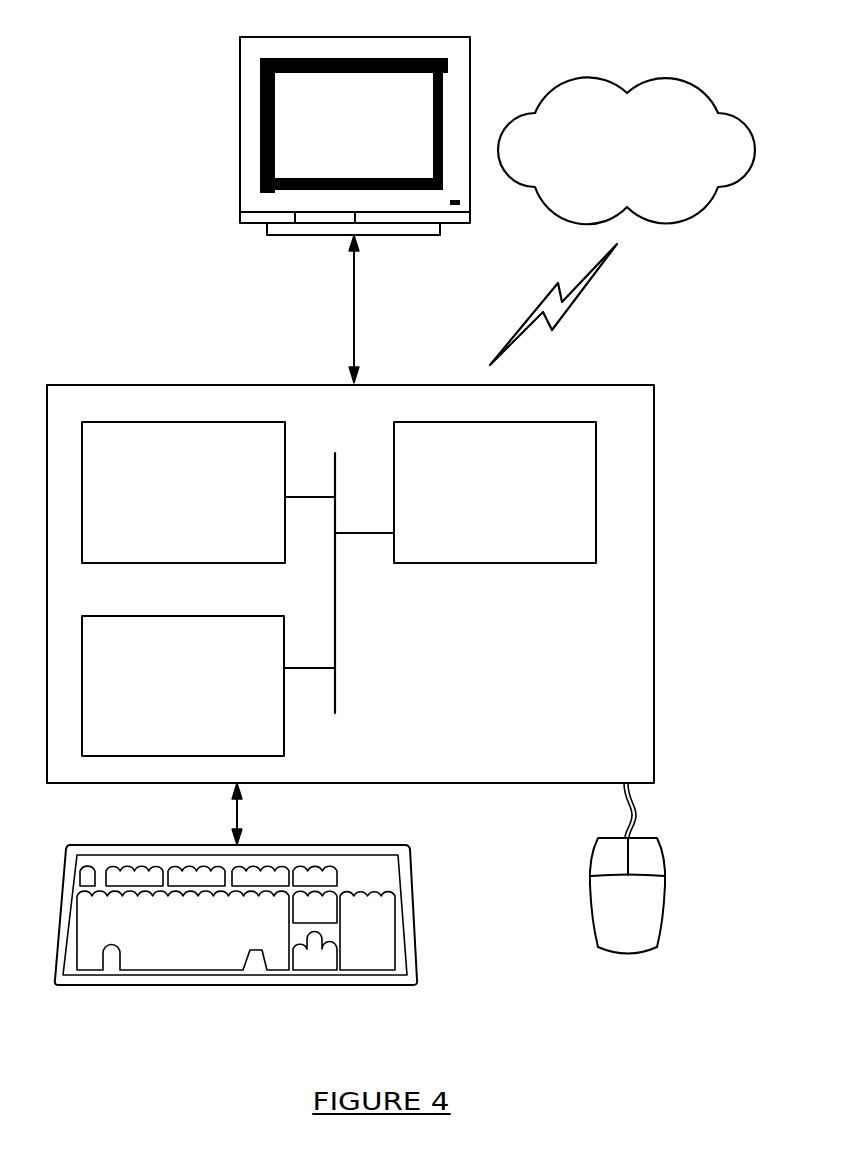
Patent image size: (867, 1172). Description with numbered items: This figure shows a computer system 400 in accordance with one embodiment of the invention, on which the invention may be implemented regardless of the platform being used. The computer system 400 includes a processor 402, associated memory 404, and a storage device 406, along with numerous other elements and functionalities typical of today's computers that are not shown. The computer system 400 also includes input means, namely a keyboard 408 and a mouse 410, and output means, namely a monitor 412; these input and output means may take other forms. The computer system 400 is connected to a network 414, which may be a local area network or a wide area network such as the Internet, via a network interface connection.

The computer system 400 is at (690, 594).
The processor 402 is at (475, 504).
The memory 404 is at (165, 504).
The storage device 406 is at (162, 697).
The keyboard 408 is at (157, 950).
The mouse 410 is at (610, 913).
The monitor 412 is at (355, 136).
The network 414 is at (605, 166).